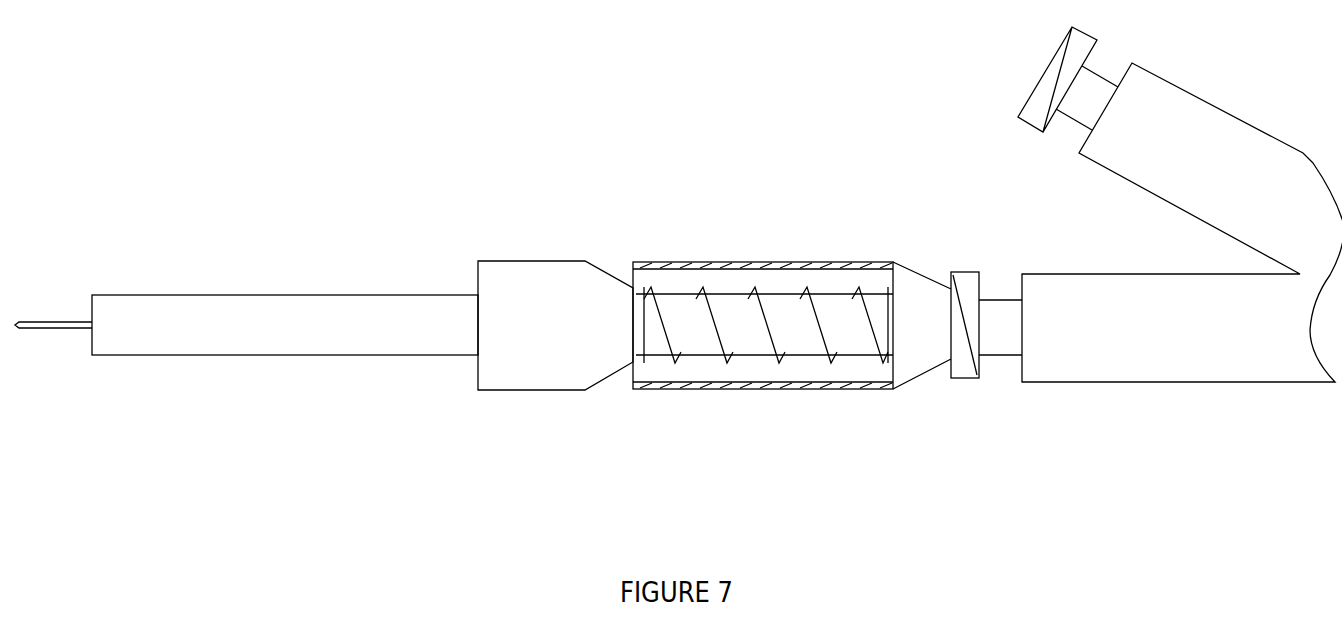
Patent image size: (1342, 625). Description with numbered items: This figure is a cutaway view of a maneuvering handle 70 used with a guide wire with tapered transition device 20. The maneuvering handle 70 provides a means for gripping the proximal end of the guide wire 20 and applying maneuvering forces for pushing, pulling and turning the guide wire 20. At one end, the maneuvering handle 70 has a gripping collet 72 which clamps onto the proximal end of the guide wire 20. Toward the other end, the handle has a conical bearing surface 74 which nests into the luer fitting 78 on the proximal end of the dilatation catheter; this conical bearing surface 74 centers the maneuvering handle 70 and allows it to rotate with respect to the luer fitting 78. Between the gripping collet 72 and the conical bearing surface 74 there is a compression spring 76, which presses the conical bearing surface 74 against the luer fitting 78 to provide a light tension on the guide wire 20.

The guide wire with tapered transition device 20 is at (70, 330).
The maneuvering handle 70 is at (750, 440).
The gripping collet 72 is at (562, 260).
The conical bearing surface 74 is at (926, 277).
The compression spring 76 is at (708, 307).
The luer fitting 78 is at (967, 380).